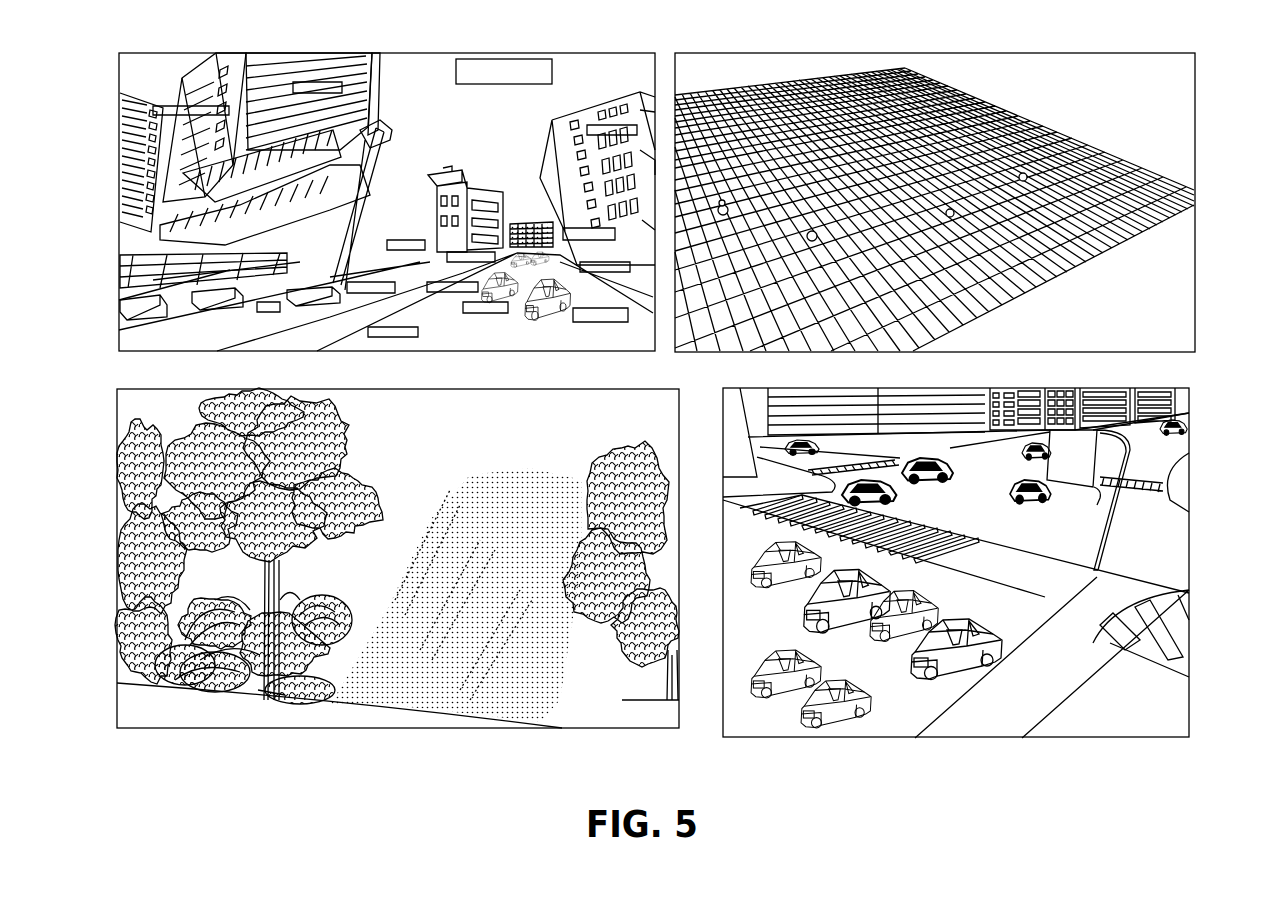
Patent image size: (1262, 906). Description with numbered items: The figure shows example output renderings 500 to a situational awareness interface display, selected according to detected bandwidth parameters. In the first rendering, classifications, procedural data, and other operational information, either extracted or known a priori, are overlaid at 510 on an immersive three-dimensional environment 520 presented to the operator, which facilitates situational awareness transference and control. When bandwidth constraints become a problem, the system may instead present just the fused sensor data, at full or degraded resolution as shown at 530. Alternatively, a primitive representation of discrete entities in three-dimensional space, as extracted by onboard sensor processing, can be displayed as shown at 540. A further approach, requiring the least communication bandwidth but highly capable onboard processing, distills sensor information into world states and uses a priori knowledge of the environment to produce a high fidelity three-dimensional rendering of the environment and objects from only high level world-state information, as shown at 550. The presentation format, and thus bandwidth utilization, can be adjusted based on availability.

The composite display of multiple image layers 500 is at (145, 35).
The overlay 510 is at (505, 59).
The immersive 3D environment 520 is at (118, 219).
The fused sensor data at full or degraded resolution 530 is at (118, 557).
The primitive representation of discrete entities in 3D space 540 is at (1195, 194).
The high fidelity 3D rendering of the environment and objects 550 is at (1190, 565).